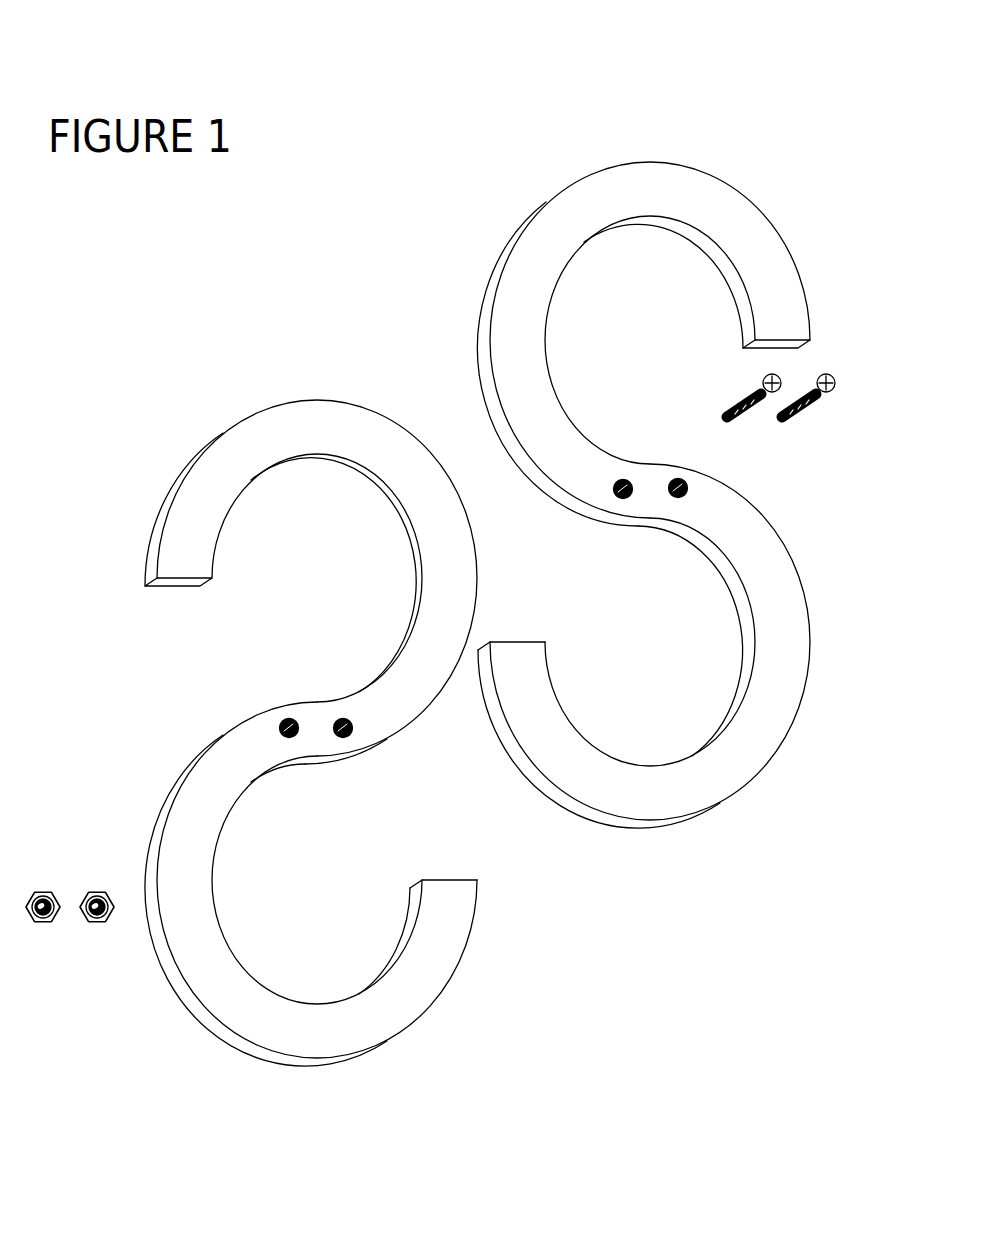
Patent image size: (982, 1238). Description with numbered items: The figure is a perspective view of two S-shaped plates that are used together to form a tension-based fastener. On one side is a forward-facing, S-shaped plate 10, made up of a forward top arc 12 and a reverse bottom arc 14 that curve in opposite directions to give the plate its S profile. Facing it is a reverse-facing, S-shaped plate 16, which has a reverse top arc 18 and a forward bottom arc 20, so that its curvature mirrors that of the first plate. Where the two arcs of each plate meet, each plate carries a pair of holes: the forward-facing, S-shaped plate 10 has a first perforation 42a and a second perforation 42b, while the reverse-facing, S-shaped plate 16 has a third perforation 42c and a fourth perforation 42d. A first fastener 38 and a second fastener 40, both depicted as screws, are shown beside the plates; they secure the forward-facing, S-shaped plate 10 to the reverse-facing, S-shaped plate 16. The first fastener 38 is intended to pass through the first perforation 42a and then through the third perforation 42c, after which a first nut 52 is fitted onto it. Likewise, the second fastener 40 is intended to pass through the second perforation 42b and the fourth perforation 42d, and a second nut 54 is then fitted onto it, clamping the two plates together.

The forward-facing, S-shaped plate 10 is at (616, 506).
The forward top arc 12 is at (650, 188).
The reverse bottom arc 14 is at (650, 793).
The reverse-facing, S-shaped plate 16 is at (347, 726).
The reverse top arc 18 is at (317, 427).
The forward bottom arc 20 is at (317, 1032).
The first fastener 38 is at (745, 395).
The second fastener 40 is at (805, 407).
The first perforation 42a is at (623, 478).
The second perforation 42b is at (677, 500).
The third perforation 42c is at (290, 740).
The fourth perforation 42d is at (343, 716).
The first nut 52 is at (38, 925).
The second nut 54 is at (96, 890).